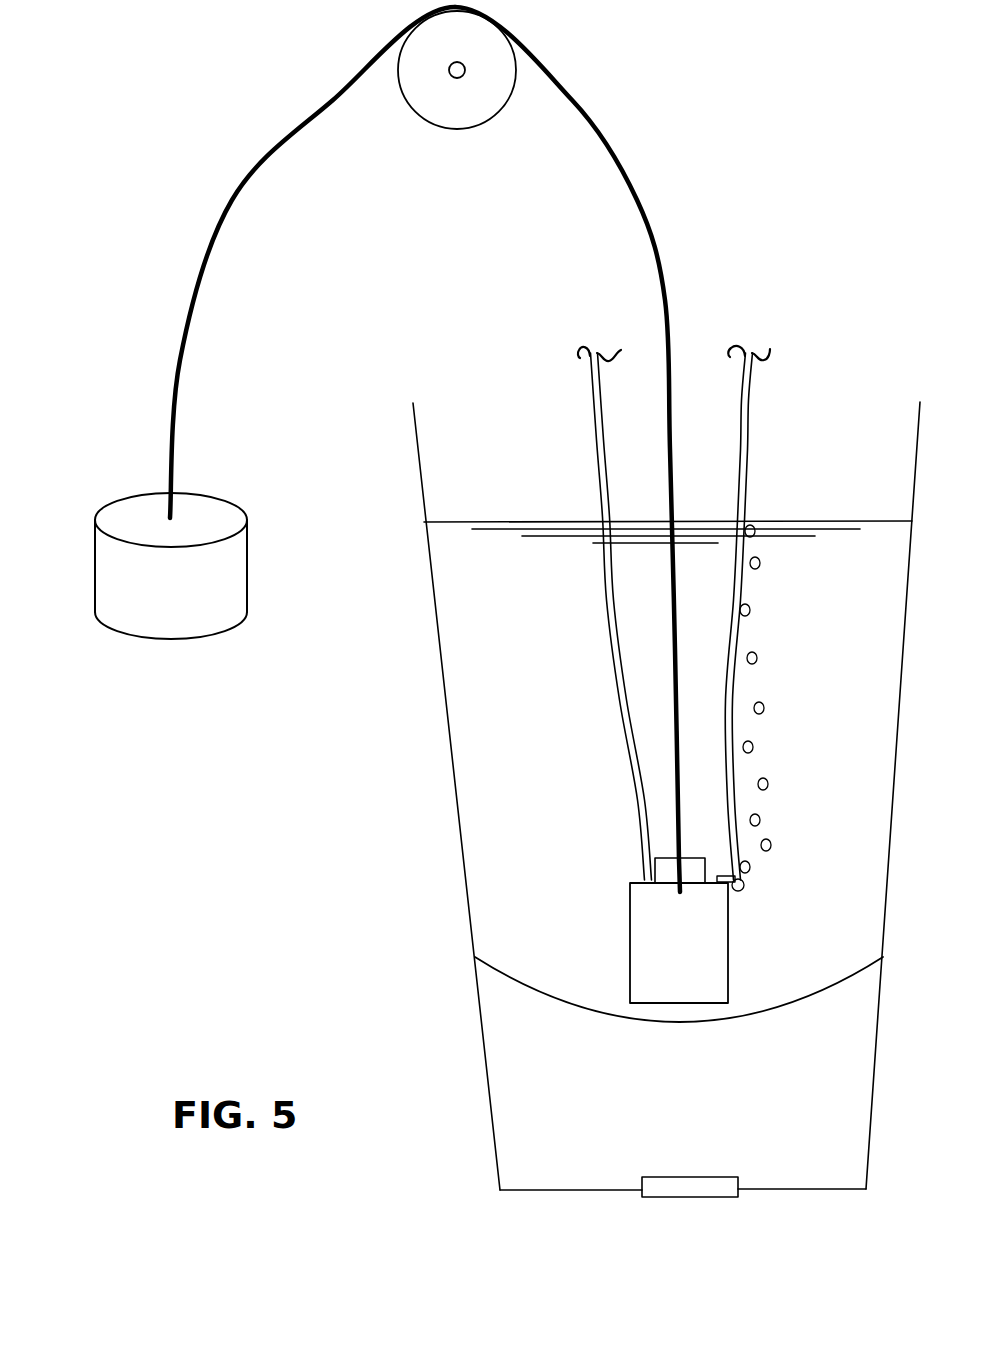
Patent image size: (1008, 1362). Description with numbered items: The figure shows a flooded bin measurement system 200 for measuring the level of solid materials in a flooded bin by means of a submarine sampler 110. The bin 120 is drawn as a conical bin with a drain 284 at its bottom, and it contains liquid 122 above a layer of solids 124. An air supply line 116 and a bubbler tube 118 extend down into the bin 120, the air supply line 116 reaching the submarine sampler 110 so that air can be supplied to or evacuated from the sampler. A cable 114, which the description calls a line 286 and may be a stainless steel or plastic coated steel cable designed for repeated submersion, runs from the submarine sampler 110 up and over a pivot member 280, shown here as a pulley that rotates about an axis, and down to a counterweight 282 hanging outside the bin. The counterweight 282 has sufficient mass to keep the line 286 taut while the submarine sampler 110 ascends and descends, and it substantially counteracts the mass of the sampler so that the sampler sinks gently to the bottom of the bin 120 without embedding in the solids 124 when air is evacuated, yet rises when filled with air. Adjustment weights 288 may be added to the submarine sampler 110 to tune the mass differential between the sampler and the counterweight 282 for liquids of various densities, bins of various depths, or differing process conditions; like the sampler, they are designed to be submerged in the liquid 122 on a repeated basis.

The submarine sampler 110 is at (630, 933).
The cable 114 is at (672, 672).
The air supply line 116 is at (627, 782).
The bubbler tube 118 is at (730, 698).
The bin 120 is at (463, 872).
The liquid 122 is at (505, 650).
The solids 124 is at (537, 1107).
The system 200 is at (806, 416).
The pivot member 280 is at (435, 100).
The counterweight 282 is at (217, 617).
The drain 284 is at (652, 1197).
The line 286 is at (178, 357).
The adjustment weights 288 is at (668, 868).